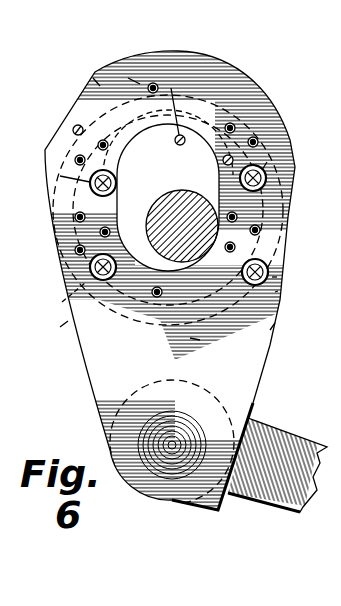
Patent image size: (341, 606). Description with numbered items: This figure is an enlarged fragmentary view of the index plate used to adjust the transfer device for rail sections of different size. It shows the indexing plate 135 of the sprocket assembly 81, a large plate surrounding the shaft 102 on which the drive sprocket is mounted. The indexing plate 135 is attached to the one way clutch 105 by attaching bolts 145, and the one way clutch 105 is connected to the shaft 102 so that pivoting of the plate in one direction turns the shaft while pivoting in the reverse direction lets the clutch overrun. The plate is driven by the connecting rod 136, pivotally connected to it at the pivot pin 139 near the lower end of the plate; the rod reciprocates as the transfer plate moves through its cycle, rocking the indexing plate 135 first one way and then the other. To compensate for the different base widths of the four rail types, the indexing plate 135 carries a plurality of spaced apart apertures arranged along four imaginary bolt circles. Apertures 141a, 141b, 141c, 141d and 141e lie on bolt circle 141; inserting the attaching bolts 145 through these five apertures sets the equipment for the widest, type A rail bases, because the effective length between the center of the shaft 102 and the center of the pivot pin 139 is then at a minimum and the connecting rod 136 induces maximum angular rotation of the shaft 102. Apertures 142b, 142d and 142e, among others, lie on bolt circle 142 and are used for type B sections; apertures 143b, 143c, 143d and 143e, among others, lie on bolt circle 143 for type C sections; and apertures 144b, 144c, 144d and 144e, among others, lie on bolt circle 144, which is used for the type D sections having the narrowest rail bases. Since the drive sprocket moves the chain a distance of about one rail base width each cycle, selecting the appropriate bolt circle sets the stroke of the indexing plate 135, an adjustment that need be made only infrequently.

The sprocket assembly 81 is at (66, 323).
The shaft 102 is at (118, 206).
The one way clutch 105 is at (275, 323).
The indexing plate 135 is at (82, 357).
The connecting rod 136 is at (283, 440).
The pivot pin 139 is at (172, 440).
The bolt circle 141 is at (278, 291).
The aperture 141a is at (62, 302).
The aperture 141b is at (200, 340).
The aperture 141c is at (277, 277).
The aperture 141d is at (267, 162).
The aperture 141e is at (60, 176).
The bolt circle 142 is at (132, 325).
The aperture 142b is at (156, 297).
The aperture 142d is at (180, 145).
The aperture 142e is at (74, 159).
The bolt circle 143 is at (133, 80).
The aperture 143b is at (260, 233).
The aperture 143c is at (254, 137).
The aperture 143d is at (171, 88).
The aperture 143e is at (98, 145).
The bolt circle 144 is at (96, 80).
The aperture 144b is at (230, 213).
The aperture 144c is at (230, 123).
The aperture 144d is at (152, 83).
The aperture 144e is at (75, 126).
The attaching bolts 145 is at (112, 193).